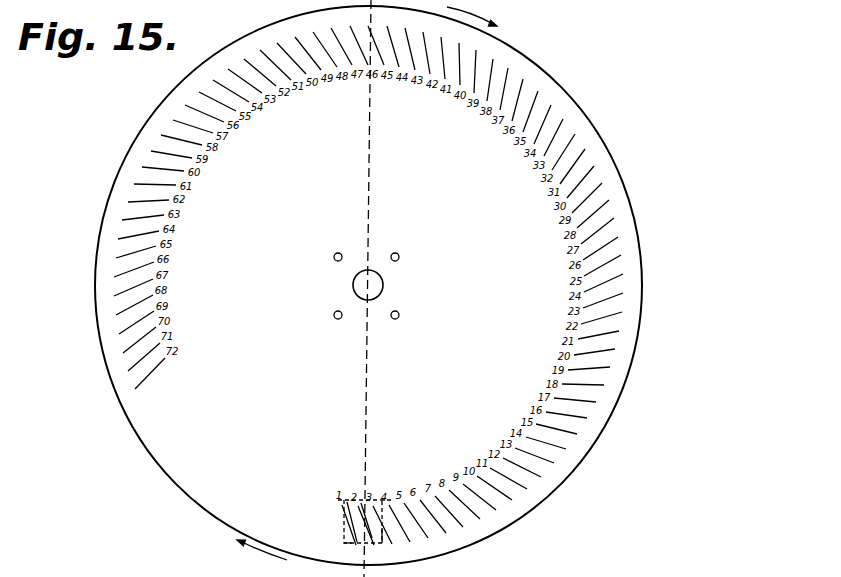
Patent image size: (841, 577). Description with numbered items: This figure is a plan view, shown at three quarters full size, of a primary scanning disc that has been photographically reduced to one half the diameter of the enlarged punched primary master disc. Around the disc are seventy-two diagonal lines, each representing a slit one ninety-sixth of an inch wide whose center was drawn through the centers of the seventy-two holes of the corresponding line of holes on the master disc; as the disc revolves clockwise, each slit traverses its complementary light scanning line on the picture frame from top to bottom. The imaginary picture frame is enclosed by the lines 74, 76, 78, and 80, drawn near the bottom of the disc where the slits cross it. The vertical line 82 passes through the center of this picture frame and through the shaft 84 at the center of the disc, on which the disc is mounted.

The picture frame line 74 is at (344, 517).
The picture frame line 76 is at (384, 536).
The picture frame line 78 is at (360, 500).
The picture frame line 80 is at (345, 543).
The vertical line 82 is at (368, 387).
The shaft 84 is at (354, 287).